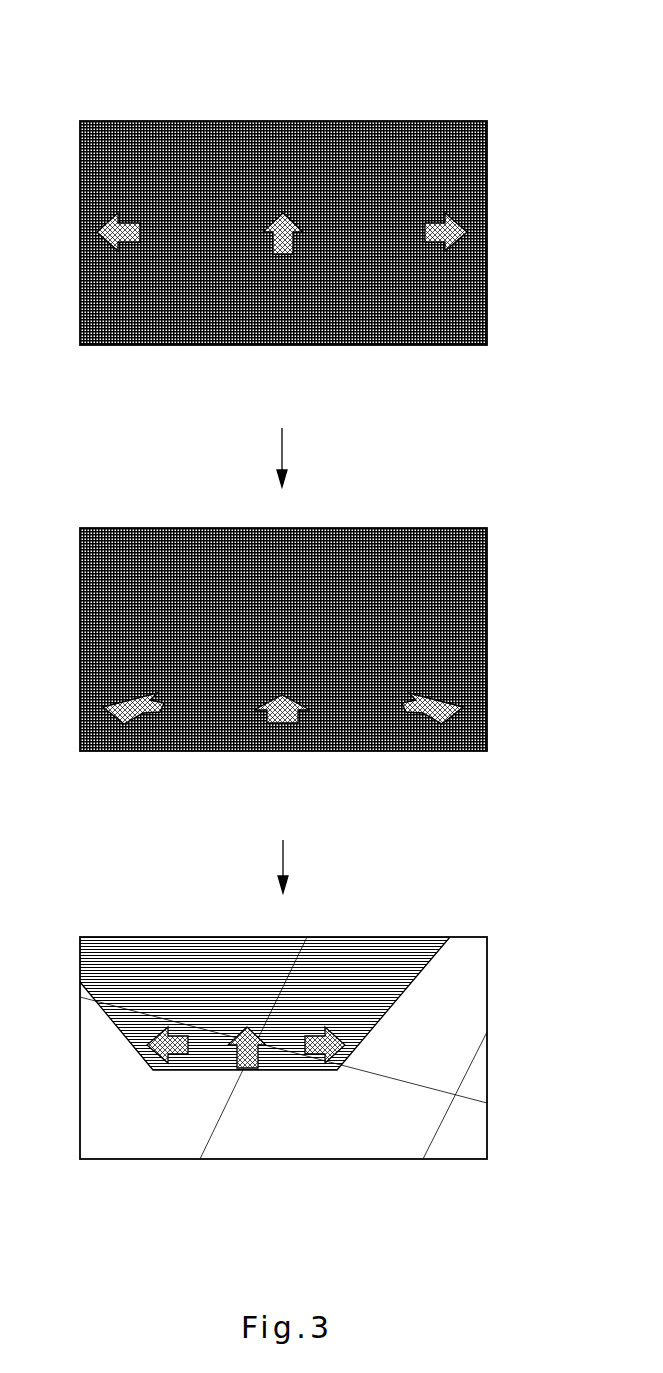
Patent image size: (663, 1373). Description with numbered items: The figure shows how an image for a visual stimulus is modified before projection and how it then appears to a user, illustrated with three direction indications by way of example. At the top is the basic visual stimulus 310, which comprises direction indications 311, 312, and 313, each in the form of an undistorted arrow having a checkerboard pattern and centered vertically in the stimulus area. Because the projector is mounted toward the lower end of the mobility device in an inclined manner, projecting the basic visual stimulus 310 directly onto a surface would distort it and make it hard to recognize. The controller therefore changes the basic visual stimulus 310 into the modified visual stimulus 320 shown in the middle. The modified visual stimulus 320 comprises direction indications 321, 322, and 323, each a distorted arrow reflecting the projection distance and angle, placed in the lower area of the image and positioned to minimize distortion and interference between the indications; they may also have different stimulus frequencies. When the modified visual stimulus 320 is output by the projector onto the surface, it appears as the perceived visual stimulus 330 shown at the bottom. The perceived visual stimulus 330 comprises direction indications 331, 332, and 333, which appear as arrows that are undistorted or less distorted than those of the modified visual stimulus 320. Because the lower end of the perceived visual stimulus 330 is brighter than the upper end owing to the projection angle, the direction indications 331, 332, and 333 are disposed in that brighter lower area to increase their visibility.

The basic visual stimulus 310 is at (371, 90).
The direction indication 311 is at (283, 254).
The direction indication 312 is at (128, 248).
The direction indication 313 is at (437, 247).
The modified visual stimulus 320 is at (371, 500).
The direction indication 321 is at (280, 723).
The direction indication 322 is at (138, 718).
The direction indication 323 is at (422, 718).
The perceived visual stimulus 330 is at (368, 960).
The direction indication 331 is at (247, 1068).
The direction indication 332 is at (178, 1058).
The direction indication 333 is at (315, 1060).